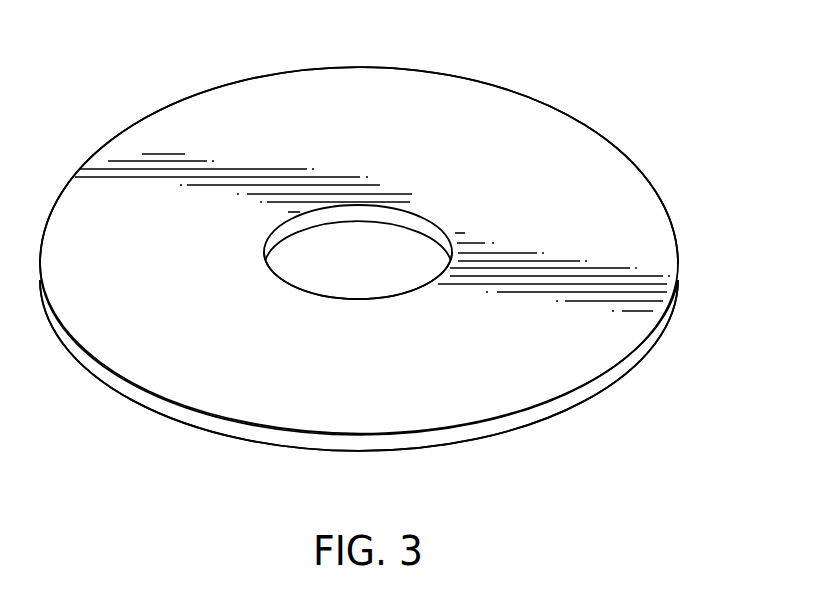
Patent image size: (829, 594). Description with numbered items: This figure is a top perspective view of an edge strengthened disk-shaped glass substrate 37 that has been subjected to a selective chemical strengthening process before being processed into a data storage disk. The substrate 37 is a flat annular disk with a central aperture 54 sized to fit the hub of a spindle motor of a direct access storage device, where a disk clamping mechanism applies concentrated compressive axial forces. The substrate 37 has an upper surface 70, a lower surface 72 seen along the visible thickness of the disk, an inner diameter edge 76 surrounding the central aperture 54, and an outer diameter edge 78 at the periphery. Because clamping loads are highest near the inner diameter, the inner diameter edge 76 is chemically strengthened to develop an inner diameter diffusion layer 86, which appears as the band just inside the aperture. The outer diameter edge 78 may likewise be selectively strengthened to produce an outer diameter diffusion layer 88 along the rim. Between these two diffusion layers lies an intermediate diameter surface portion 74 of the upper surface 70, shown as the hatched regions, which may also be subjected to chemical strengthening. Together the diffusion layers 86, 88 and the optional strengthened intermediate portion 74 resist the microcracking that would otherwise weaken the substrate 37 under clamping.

The disk-shaped glass substrate 37 is at (535, 98).
The central aperture 54 is at (418, 245).
The upper surface 70 is at (280, 95).
The lower surface 72 is at (650, 359).
The intermediate diameter surface portion 74 is at (614, 247).
The inner diameter edge 76 is at (318, 296).
The outer diameter edge 78 is at (483, 437).
The inner diameter diffusion layer 86 is at (280, 237).
The outer diameter diffusion layer 88 is at (150, 396).